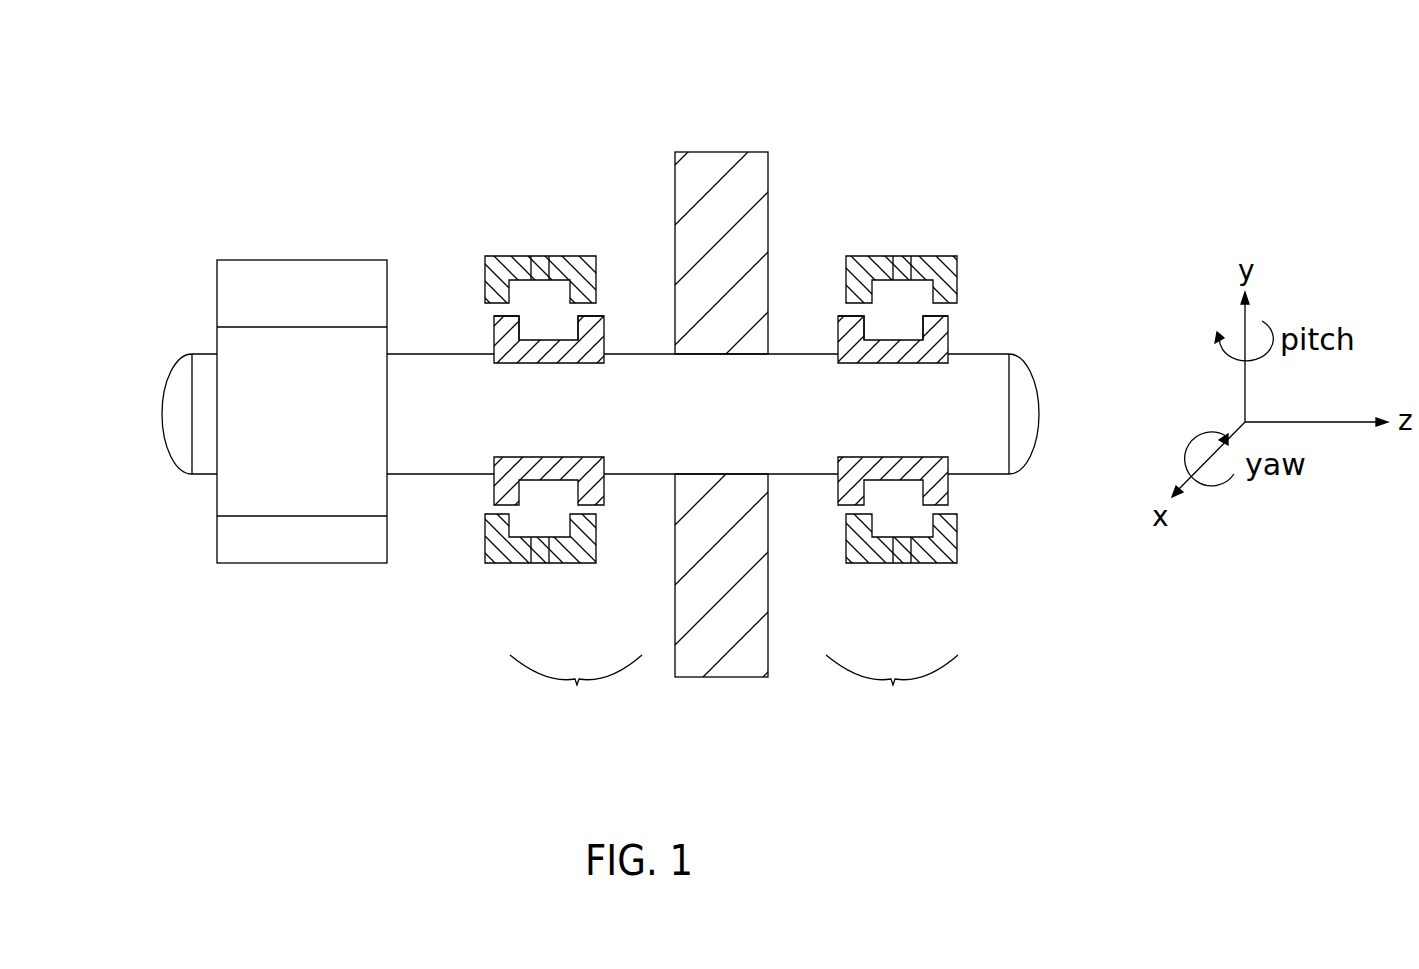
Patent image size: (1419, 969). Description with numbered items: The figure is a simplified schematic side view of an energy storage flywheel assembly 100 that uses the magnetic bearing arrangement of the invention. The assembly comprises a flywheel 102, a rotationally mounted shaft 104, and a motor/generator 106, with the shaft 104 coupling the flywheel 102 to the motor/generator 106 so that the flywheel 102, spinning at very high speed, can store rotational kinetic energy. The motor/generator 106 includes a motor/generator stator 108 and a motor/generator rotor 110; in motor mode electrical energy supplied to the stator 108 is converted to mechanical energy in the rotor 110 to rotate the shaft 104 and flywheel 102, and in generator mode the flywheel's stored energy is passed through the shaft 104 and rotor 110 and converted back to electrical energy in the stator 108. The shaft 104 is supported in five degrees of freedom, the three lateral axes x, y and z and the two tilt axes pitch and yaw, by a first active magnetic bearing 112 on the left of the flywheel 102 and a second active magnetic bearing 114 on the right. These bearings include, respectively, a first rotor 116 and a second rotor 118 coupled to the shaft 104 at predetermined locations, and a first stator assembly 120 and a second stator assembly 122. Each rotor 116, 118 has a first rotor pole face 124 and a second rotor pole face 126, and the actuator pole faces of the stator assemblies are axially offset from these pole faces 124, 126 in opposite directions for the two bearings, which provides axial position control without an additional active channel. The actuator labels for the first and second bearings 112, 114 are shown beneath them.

The energy storage flywheel assembly 100 is at (398, 98).
The flywheel 102 is at (718, 156).
The shaft 104 is at (1010, 353).
The motor/generator 106 is at (197, 277).
The motor/generator stator 108 is at (326, 307).
The motor/generator rotor 110 is at (326, 437).
The first active magnetic bearing 112 is at (642, 177).
The second active magnetic bearing 114 is at (958, 177).
The first rotor 116 is at (523, 353).
The second rotor 118 is at (866, 353).
The first stator assembly 120 is at (475, 272).
The second stator assembly 122 is at (978, 272).
The first rotor pole face 124 is at (500, 315).
The second rotor pole face 126 is at (593, 318).